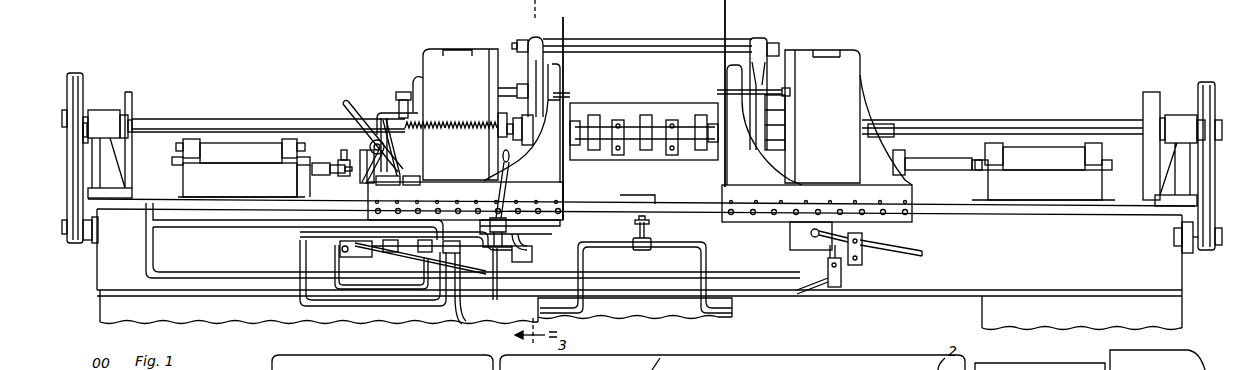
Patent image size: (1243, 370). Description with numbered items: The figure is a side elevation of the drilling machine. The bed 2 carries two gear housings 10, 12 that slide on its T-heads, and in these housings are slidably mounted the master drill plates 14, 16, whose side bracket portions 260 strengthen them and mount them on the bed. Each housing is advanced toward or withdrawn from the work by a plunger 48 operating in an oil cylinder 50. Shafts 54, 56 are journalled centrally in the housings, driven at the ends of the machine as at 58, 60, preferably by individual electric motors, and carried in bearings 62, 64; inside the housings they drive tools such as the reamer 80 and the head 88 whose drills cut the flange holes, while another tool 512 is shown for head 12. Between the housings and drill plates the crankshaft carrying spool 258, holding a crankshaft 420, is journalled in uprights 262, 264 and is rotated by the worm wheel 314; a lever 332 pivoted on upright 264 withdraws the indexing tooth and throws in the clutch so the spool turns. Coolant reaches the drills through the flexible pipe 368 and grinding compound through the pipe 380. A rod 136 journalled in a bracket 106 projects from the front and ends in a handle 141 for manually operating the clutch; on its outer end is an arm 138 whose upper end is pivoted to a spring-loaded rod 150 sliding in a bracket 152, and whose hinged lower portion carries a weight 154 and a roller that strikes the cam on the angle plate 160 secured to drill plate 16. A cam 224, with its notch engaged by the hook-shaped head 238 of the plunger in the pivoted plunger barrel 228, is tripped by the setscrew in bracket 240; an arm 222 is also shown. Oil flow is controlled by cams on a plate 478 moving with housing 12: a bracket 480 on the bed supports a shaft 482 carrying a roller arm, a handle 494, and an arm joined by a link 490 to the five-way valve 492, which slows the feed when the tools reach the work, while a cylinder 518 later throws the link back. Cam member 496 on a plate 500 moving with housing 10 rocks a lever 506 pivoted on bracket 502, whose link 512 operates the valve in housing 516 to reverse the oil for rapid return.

The bed 2 is at (1172, 279).
The gear housing 10 is at (850, 82).
The gear housing 12 is at (440, 62).
The master drill plate 14 is at (727, 79).
The master drill plate 16 is at (561, 69).
The plunger 48 is at (936, 160).
The cylinder 50 is at (233, 156).
The shaft 54 is at (275, 126).
The shaft 56 is at (1003, 128).
The drive 58 is at (78, 88).
The drive 60 is at (1207, 95).
The bearing 62 is at (106, 114).
The bearing 64 is at (1180, 118).
The reamer 80 is at (716, 92).
The head 88 is at (776, 117).
The bracket 106 is at (406, 91).
The rod 136 is at (396, 170).
The arm 138 is at (389, 137).
The handle 141 is at (353, 103).
The rod 150 is at (440, 122).
The bracket 152 is at (502, 132).
The weight 154 is at (478, 121).
The angle plate 160 is at (410, 182).
The arm 222 is at (383, 112).
The cam 224 is at (372, 140).
The plunger barrel 228 is at (365, 172).
The hook-shaped head 238 is at (369, 147).
The bracket 240 is at (385, 182).
The crankshaft carrying spool 258 is at (648, 110).
The bracket portion 260 is at (556, 170).
The upright 262 is at (760, 75).
The upright 264 is at (530, 68).
The worm wheel 314 is at (528, 134).
The lever 332 is at (544, 38).
The pipe 368 is at (723, 24).
The pipe 380 is at (560, 56).
The crankshaft 420 is at (668, 152).
The plate 478 is at (556, 228).
The bracket 480 is at (533, 253).
The shaft 482 is at (490, 224).
The link 490 is at (494, 287).
The five-way valve 492 is at (453, 298).
The handle 494 is at (509, 190).
The cam member 496 is at (850, 231).
The plate 500 is at (804, 229).
The bracket 502 is at (863, 253).
The lever 506 is at (924, 251).
The link 512 is at (571, 94).
The valve housing 516 is at (842, 273).
The cylinder 518 is at (352, 252).